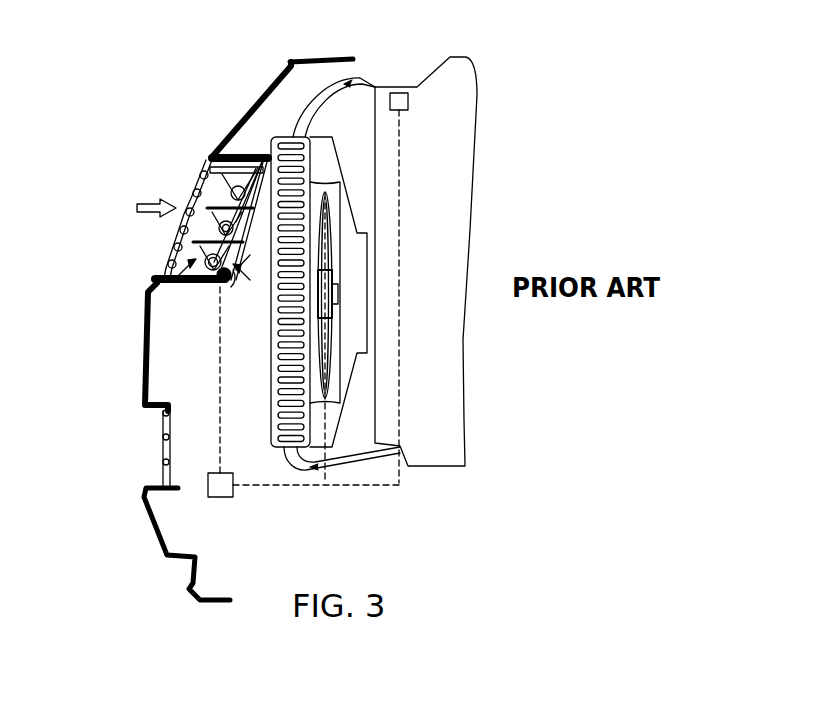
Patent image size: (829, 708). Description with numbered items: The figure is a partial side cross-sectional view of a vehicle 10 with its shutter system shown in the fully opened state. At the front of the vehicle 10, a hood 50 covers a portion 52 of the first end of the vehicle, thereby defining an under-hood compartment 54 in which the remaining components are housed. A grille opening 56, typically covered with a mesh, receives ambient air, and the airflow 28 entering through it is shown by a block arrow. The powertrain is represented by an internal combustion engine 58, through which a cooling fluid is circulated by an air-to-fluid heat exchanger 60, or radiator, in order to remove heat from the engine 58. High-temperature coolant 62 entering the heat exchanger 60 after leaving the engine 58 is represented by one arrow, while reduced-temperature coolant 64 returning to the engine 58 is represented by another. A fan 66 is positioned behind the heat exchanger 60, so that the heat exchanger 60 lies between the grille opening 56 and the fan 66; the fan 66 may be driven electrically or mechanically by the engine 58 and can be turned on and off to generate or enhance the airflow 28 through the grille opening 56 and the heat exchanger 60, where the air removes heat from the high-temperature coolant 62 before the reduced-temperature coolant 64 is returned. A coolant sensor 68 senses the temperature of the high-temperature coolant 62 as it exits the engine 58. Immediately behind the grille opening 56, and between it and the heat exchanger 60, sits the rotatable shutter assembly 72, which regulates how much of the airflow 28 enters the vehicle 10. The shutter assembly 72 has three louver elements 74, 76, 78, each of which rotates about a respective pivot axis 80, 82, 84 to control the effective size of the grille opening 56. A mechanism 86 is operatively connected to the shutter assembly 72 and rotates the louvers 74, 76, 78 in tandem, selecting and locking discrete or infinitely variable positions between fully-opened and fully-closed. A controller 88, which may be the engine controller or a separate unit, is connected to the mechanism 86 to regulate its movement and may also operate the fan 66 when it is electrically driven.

The vehicle 10 is at (412, 65).
The airflow 28 is at (124, 196).
The hood 50 is at (294, 63).
The portion of the first end 52 is at (246, 112).
The under-hood compartment 54 is at (170, 367).
The grille opening 56 is at (185, 178).
The internal combustion engine 58 is at (462, 162).
The air-to-fluid heat exchanger 60 is at (272, 397).
The high-temperature coolant 62 is at (358, 77).
The reduced-temperature coolant 64 is at (301, 468).
The fan 66 is at (334, 281).
The coolant sensor 68 is at (409, 103).
The shutter assembly 72 is at (155, 284).
The louver element 74 is at (182, 236).
The louver element 76 is at (193, 195).
The louver element 78 is at (202, 172).
The pivot axis 80 is at (210, 270).
The pivot axis 82 is at (240, 267).
The pivot axis 84 is at (237, 222).
The mechanism 86 is at (230, 270).
The controller 88 is at (220, 498).